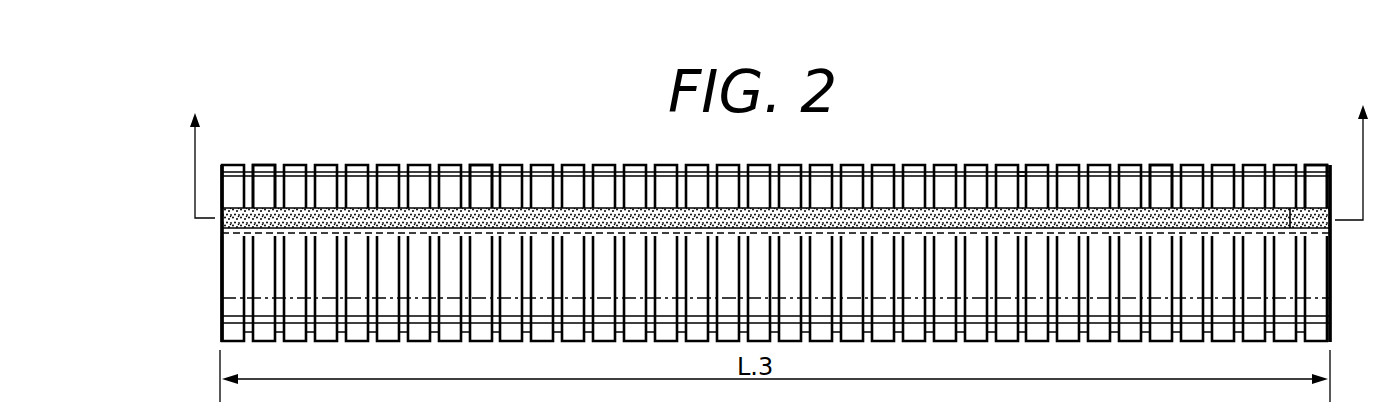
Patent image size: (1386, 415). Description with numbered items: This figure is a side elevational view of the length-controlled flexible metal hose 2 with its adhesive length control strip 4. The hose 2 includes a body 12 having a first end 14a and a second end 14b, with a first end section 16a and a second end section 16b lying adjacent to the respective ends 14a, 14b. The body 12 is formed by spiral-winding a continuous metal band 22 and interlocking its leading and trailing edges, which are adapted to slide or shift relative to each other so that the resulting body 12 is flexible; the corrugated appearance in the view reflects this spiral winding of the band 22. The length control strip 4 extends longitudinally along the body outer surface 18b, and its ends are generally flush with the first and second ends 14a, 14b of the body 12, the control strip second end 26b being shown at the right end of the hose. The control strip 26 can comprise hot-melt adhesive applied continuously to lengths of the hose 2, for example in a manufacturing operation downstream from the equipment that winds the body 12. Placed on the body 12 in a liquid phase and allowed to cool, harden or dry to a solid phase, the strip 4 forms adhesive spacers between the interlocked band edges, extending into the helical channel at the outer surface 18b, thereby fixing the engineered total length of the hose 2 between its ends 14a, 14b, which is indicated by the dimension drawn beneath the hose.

The flexible hose 2 is at (1245, 103).
The adhesive length control strip 4 is at (1032, 173).
The body 12 is at (221, 166).
The first end 14a is at (220, 175).
The second end 14b is at (1334, 213).
The first end section 16a is at (268, 165).
The second end section 16b is at (1306, 164).
The body outer surface 18b is at (1157, 183).
The continuous metal band 22 is at (468, 165).
The control strip 26 is at (220, 229).
The control strip second end 26b is at (1336, 228).